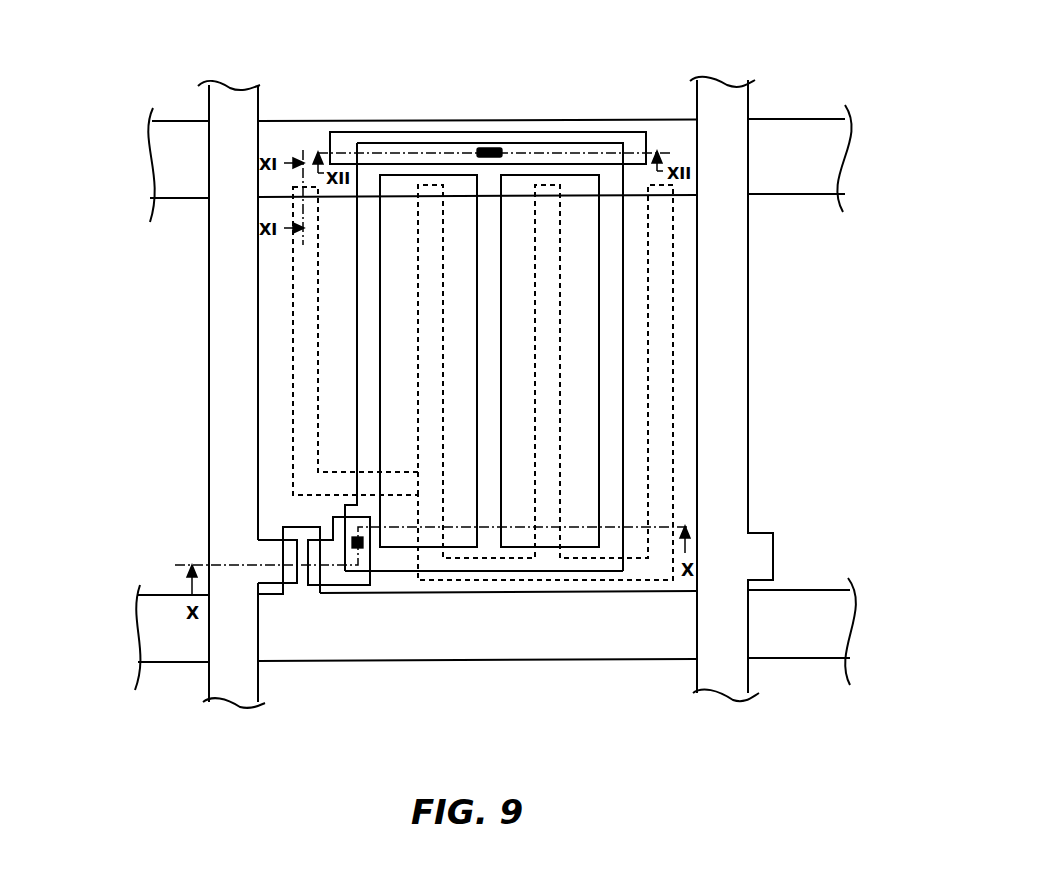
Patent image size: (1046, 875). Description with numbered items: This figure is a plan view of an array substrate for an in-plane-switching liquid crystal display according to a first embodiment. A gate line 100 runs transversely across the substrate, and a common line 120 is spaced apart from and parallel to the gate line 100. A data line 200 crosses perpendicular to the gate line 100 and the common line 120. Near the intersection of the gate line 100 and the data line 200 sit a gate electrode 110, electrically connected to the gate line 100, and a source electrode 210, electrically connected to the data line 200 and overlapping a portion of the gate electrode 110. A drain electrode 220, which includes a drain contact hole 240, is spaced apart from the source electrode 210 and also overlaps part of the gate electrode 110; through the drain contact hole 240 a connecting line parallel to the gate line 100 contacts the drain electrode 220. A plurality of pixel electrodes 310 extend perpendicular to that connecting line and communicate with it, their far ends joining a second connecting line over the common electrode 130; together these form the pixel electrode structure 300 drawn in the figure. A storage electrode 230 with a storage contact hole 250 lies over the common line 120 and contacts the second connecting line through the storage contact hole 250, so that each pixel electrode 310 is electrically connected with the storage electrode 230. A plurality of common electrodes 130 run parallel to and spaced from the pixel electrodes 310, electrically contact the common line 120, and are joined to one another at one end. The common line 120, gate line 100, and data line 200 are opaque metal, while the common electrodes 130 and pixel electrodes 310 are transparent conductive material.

The gate line 100 is at (573, 637).
The gate electrode 110 is at (302, 573).
The common line 120 is at (782, 150).
The common electrode 130 is at (658, 338).
The data line 200 is at (232, 472).
The source electrode 210 is at (278, 550).
The drain electrode 220 is at (333, 573).
The storage electrode 230 is at (645, 132).
The drain contact hole 240 is at (363, 548).
The storage contact hole 250 is at (490, 147).
The pixel electrode 300 is at (610, 403).
The pixel electrode 310 is at (403, 560).